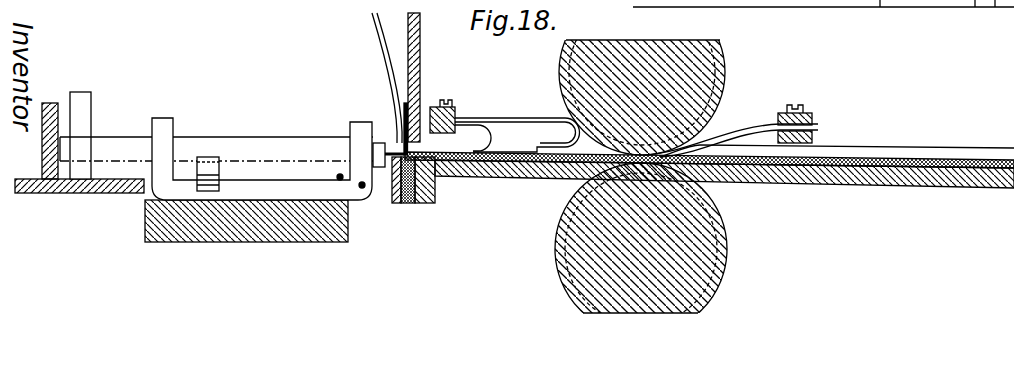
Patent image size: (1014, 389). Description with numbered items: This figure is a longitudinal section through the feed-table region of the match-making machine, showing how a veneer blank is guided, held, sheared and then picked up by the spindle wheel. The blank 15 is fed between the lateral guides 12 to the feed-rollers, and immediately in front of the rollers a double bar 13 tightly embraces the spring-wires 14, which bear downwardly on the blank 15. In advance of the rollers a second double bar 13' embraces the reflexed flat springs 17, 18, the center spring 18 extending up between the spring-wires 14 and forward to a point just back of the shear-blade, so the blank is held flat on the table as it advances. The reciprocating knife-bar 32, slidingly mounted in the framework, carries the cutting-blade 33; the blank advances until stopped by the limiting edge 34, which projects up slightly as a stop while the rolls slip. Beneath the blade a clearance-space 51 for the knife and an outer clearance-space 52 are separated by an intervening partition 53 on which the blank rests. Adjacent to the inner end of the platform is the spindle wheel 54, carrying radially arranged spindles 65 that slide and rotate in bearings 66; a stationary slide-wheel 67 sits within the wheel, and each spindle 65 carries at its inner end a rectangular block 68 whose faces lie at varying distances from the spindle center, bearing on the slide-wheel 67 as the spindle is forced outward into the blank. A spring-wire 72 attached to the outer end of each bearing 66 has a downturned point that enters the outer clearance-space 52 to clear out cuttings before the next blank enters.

The lateral guides 12 is at (988, 142).
The double bar 13 is at (818, 124).
The double bar 13' is at (454, 95).
The spring-wires 14 is at (730, 123).
The blank 15 is at (877, 165).
The reflexed flat spring 17 is at (541, 118).
The reflexed flat spring 18 is at (487, 129).
The reciprocating knife-bar 32 is at (420, 43).
The cutting-blade 33 is at (399, 143).
The limiting edge 34 is at (386, 165).
The clearance-space 51 is at (411, 204).
The outer clearance-space 52 is at (396, 204).
The partition 53 is at (403, 204).
The spindle wheel 54 is at (253, 228).
The spindle 65 is at (232, 152).
The bearing 66 is at (162, 124).
The slide-wheel 67 is at (98, 194).
The rectangular block 68 is at (80, 103).
The spring-wire 72 is at (337, 175).